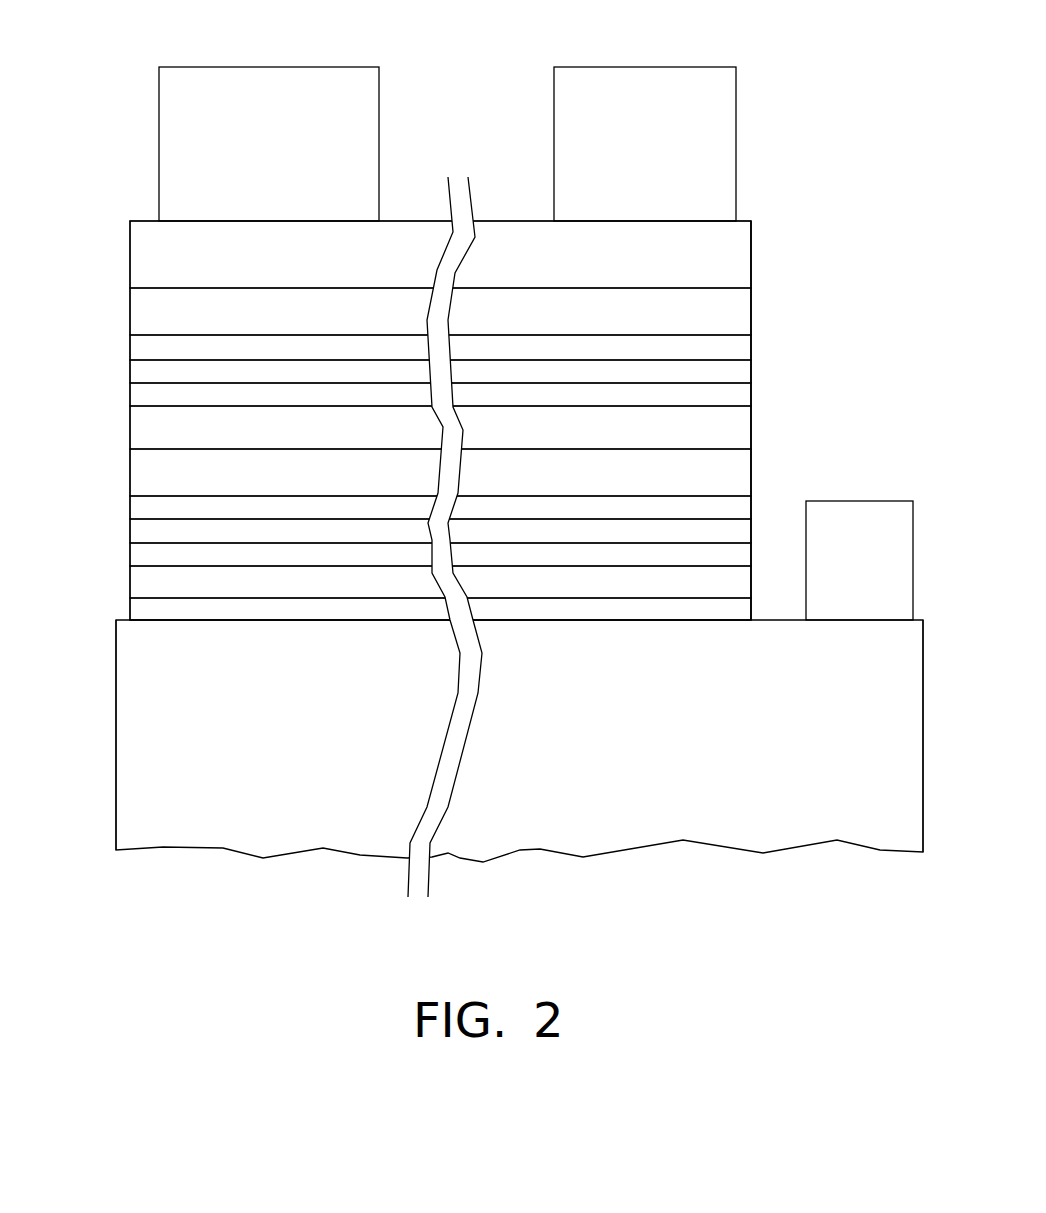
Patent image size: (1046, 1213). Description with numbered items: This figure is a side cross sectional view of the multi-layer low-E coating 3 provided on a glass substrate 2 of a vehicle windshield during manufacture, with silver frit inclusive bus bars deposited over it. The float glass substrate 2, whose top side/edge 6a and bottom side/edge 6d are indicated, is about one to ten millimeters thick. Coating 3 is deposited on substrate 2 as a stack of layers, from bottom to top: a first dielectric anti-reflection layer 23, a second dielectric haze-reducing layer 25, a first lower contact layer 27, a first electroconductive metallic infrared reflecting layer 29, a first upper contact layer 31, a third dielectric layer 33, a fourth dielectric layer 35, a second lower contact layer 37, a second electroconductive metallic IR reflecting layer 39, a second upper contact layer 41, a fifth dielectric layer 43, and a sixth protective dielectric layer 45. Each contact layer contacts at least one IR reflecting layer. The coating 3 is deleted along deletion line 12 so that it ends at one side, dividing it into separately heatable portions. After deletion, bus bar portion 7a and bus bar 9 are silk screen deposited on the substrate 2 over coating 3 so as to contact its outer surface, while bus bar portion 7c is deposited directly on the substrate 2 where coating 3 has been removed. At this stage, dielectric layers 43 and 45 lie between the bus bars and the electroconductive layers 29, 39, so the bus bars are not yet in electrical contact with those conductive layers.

The glass substrate 2 is at (142, 738).
The multi-layer low-E coating 3 is at (429, 424).
The top side/edge 6a is at (115, 800).
The bottom side/edge 6d is at (923, 742).
The bus bar portion 7a is at (222, 72).
The bus bar portion 7c is at (868, 500).
The bus bar 9 is at (600, 73).
The deletion line 12 is at (750, 582).
The first dielectric anti-reflection layer 23 is at (143, 606).
The second dielectric haze-reducing layer 25 is at (140, 584).
The first lower contact layer 27 is at (130, 554).
The first electroconductive metallic infrared reflecting layer 29 is at (140, 531).
The first upper contact layer 31 is at (147, 507).
The third dielectric layer 33 is at (150, 478).
The fourth dielectric layer 35 is at (155, 433).
The second lower contact layer 37 is at (145, 399).
The second electroconductive metallic IR reflecting layer 39 is at (150, 373).
The second upper contact layer 41 is at (150, 350).
The fifth dielectric layer 43 is at (150, 307).
The sixth protective dielectric layer 45 is at (152, 260).